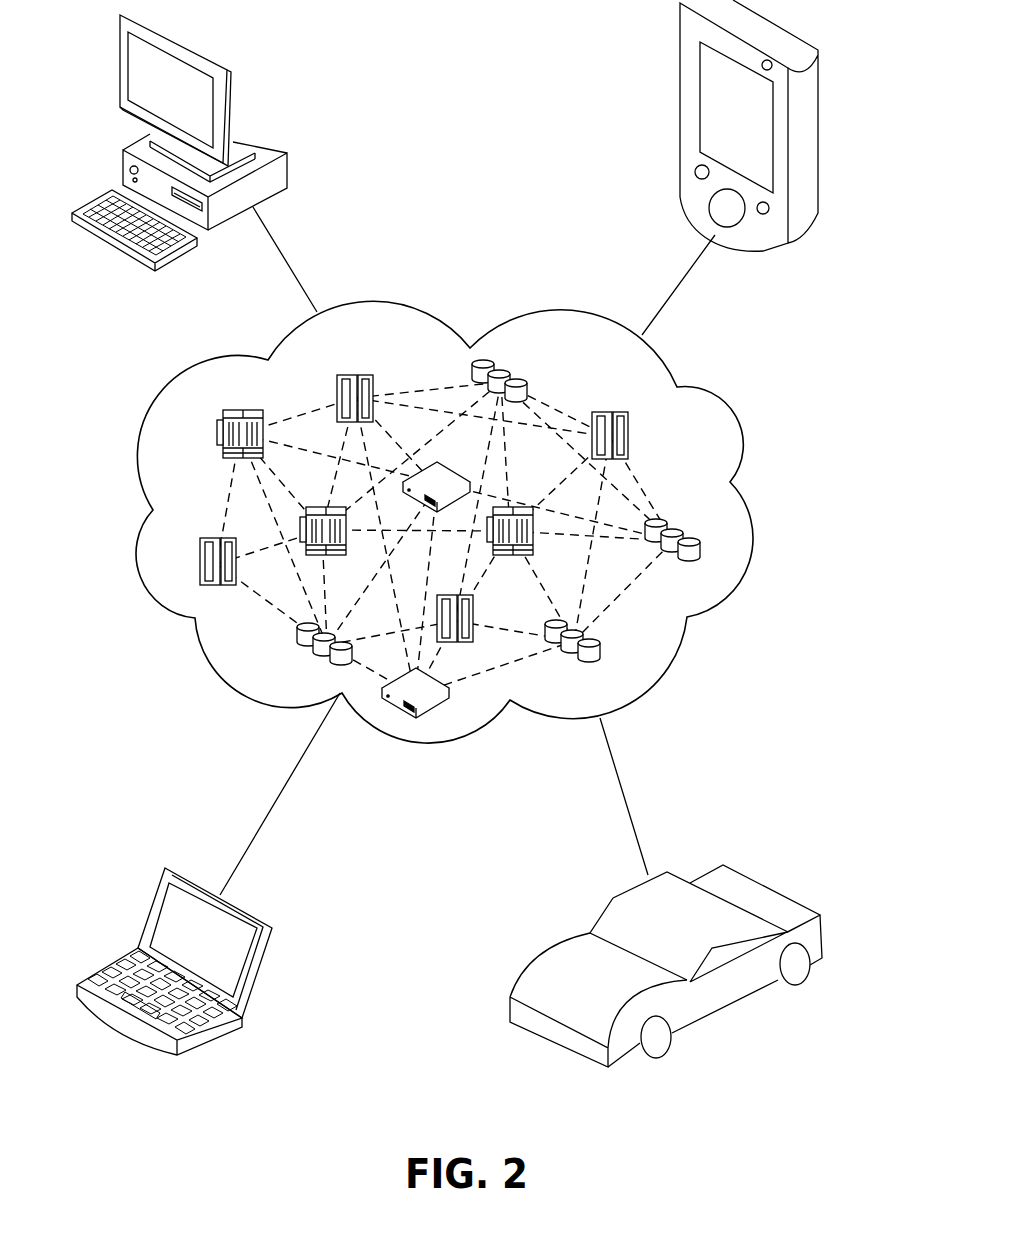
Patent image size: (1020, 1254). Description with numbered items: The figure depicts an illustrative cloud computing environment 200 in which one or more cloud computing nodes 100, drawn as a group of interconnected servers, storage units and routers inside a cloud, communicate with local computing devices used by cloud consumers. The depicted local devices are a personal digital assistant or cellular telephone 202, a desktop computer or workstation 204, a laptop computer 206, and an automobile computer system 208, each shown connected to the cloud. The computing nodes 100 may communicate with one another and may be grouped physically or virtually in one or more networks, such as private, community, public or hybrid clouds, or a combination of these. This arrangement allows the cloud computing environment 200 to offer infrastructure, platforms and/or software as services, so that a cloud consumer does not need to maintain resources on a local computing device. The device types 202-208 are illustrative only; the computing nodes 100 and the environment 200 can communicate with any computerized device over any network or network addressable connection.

The cloud computing nodes 100 is at (675, 460).
The cloud computing environment 200 is at (472, 205).
The personal digital assistant (PDA) or cellular telephone 202 is at (680, 70).
The desktop computer 204 is at (287, 168).
The laptop computer 206 is at (270, 935).
The automobile computer system 208 is at (825, 933).